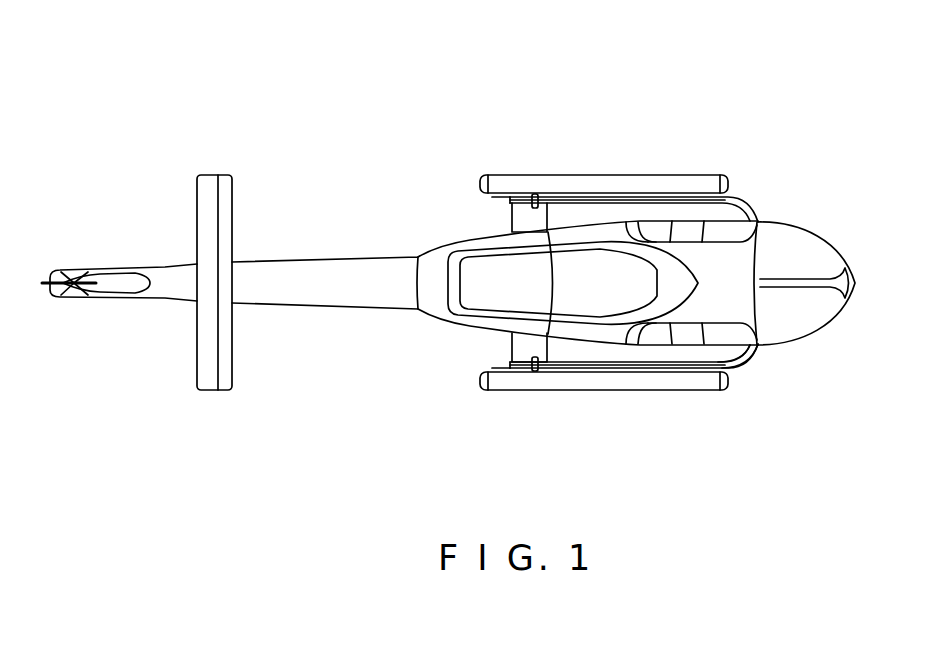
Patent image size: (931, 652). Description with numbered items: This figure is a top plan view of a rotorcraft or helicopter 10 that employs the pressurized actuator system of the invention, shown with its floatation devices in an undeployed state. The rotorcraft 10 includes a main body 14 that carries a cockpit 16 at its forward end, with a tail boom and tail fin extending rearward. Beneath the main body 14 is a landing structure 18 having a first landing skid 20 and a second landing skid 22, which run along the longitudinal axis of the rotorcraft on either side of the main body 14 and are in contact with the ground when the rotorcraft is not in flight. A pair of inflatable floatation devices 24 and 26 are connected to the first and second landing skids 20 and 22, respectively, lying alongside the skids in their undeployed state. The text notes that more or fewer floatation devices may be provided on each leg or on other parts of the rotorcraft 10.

The rotorcraft 10 is at (478, 106).
The main body 14 is at (755, 258).
The cockpit 16 is at (788, 258).
The landing structure 18 is at (760, 370).
The first landing skid 20 is at (680, 370).
The second landing skid 22 is at (678, 196).
The inflatable floatation device 24 is at (632, 388).
The inflatable floatation device 26 is at (577, 183).